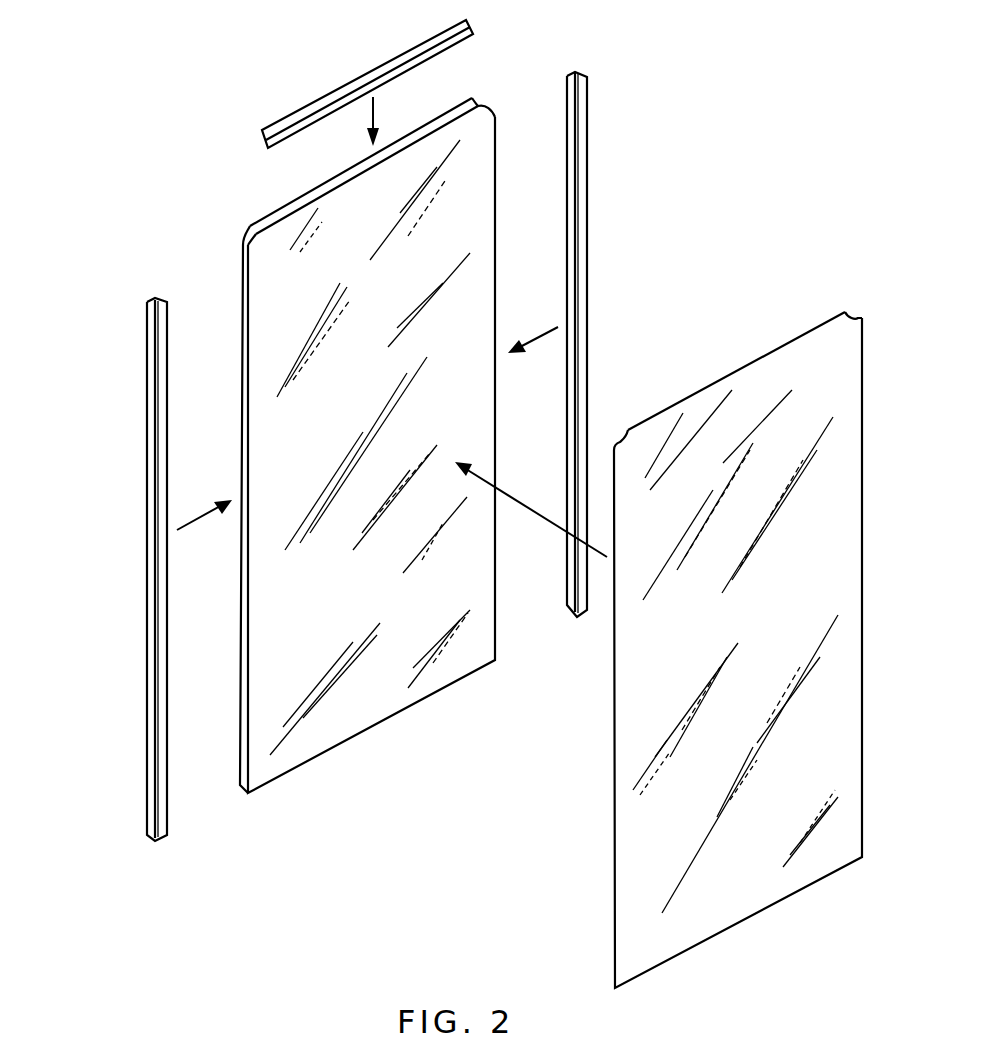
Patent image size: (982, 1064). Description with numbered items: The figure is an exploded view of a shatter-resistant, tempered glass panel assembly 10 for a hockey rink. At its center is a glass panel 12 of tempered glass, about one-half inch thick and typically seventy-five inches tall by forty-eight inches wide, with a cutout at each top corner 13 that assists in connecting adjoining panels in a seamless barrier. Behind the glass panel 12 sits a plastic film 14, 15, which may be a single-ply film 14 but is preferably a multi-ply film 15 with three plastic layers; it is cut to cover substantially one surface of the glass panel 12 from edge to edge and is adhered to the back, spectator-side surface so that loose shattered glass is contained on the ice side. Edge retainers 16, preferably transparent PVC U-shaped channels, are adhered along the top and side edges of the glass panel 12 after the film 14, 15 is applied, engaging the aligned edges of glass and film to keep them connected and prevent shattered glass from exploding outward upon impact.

The glass panel assembly 10 is at (716, 134).
The glass panel 12 is at (415, 702).
The top corner 13 is at (243, 228).
The single-ply film 14 is at (610, 795).
The multi-ply film 15 is at (738, 650).
The edge retainers 16 is at (355, 75).